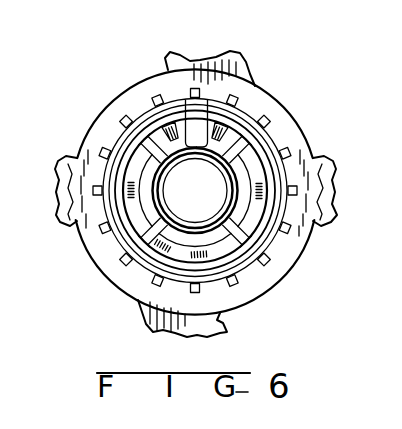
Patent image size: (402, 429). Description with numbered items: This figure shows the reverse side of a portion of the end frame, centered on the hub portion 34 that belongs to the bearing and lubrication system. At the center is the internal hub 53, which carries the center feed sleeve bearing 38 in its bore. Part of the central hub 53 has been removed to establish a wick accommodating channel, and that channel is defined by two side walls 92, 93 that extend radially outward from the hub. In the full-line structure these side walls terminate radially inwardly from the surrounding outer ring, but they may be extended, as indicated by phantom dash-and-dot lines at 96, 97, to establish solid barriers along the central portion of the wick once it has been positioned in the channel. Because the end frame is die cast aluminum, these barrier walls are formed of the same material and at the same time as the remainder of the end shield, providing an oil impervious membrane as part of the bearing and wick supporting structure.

The hub portion 34 is at (299, 130).
The sleeve bearing 38 is at (231, 179).
The internal hub 53 is at (133, 225).
The side wall 92 is at (191, 146).
The side wall 93 is at (205, 150).
The extended wall portion 96 is at (240, 112).
The extended wall portion 97 is at (161, 115).